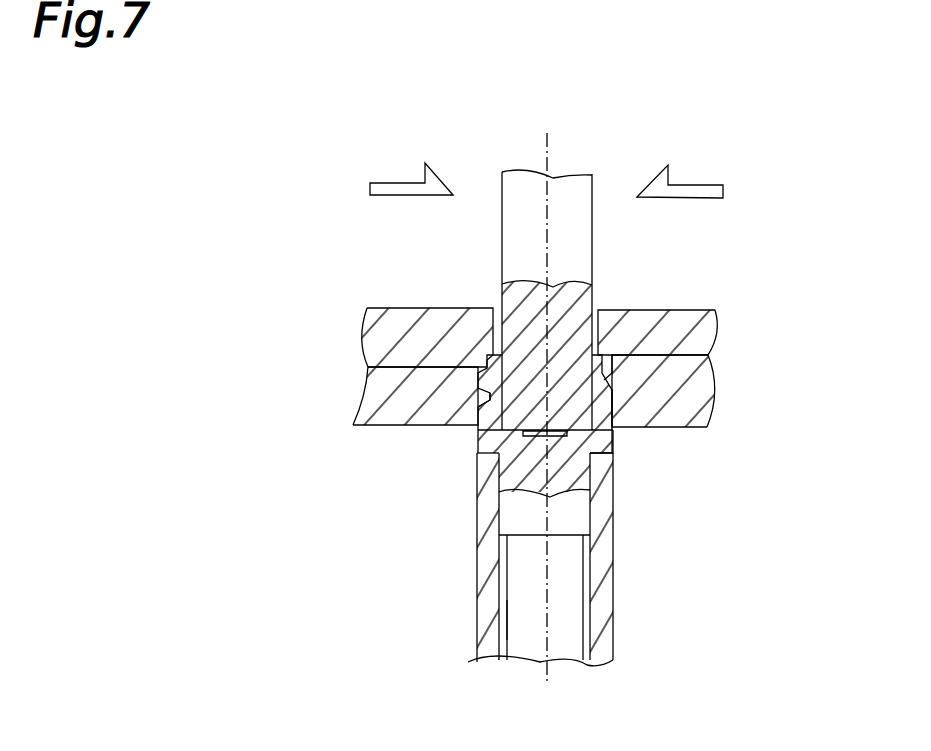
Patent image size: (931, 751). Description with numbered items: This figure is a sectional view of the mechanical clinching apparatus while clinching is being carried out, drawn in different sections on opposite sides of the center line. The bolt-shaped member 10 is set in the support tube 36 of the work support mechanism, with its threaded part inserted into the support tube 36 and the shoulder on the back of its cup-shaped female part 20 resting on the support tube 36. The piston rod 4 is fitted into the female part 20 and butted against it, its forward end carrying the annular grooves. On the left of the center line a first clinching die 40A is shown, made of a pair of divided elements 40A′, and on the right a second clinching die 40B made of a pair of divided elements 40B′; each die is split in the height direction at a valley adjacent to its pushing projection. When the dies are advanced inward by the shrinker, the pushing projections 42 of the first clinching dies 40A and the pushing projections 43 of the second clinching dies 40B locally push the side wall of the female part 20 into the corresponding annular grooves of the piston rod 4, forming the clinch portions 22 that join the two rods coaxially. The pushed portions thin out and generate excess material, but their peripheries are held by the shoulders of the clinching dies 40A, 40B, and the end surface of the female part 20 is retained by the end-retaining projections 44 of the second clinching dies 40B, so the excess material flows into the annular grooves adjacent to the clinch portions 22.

The piston rod 4 is at (566, 195).
The clinch portions 22 is at (470, 310).
The pushing projections 42 is at (488, 396).
The first clinching dies 40A is at (378, 308).
The divided elements 40A′ is at (375, 393).
The second clinching dies 40B is at (697, 308).
The divided elements 40B′ is at (703, 368).
The end-retaining projections 44 is at (633, 310).
The pushing projections 43 is at (614, 380).
The support tube 36 is at (603, 583).
The cup-shaped female part 20 is at (607, 440).
The bolt-shaped member 10 is at (504, 617).